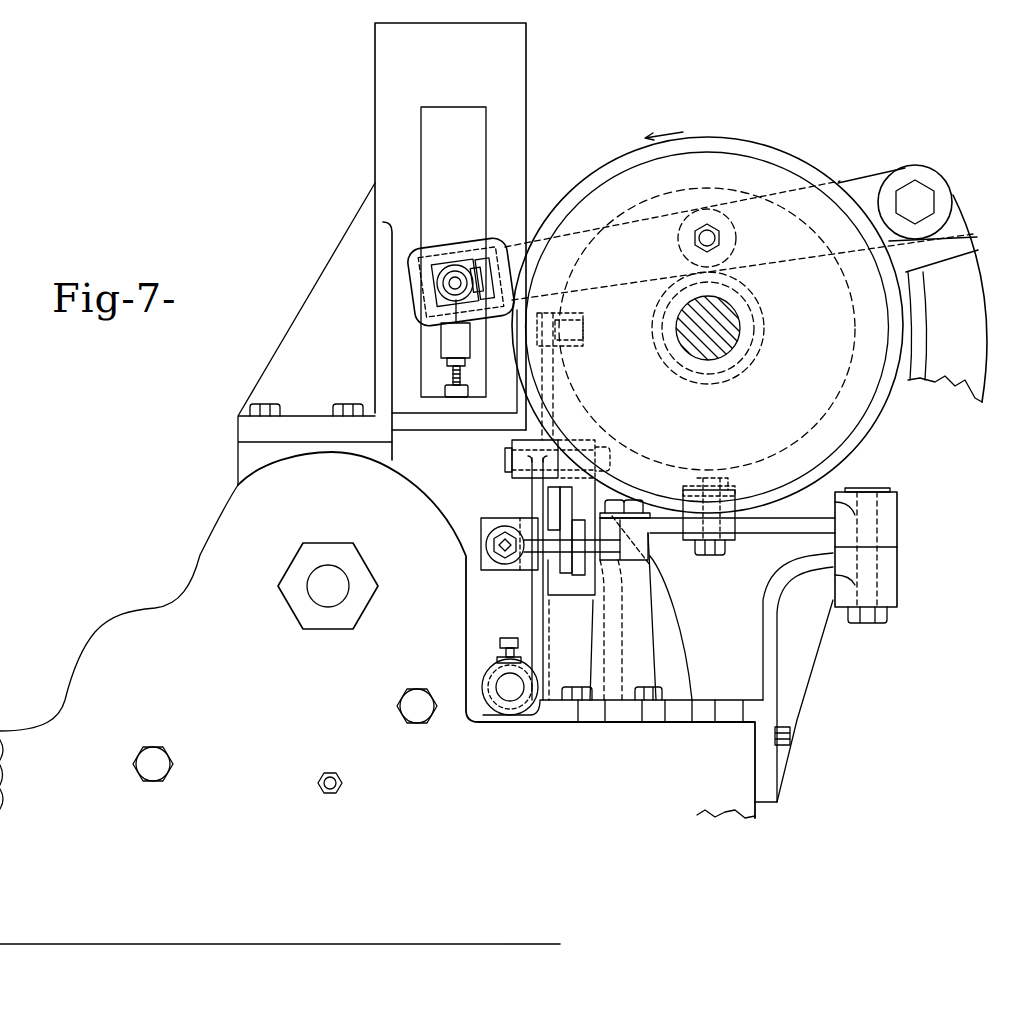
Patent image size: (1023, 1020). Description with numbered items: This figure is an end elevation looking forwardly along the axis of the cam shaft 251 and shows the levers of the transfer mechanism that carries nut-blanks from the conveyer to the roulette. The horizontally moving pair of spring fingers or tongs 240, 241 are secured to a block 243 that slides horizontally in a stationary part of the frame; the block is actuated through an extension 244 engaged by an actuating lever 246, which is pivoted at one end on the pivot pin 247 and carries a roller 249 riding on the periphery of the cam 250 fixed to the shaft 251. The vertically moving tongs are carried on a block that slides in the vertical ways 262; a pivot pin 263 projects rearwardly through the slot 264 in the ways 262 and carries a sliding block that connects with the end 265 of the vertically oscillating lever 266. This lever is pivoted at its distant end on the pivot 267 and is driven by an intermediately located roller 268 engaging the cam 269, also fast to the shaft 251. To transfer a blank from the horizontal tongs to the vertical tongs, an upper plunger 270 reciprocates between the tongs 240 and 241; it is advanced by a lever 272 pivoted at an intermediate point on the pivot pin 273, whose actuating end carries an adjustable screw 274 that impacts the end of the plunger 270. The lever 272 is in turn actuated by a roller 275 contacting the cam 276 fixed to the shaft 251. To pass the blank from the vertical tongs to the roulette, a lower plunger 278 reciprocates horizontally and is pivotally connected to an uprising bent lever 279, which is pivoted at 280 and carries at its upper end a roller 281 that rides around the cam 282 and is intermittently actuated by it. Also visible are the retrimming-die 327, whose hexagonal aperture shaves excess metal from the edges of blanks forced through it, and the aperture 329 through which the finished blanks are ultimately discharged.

The spring finger or tong 240 is at (523, 522).
The spring finger or tong 241 is at (514, 571).
The block 243 is at (482, 555).
The extension 244 is at (566, 528).
The actuating lever 246 is at (772, 530).
The pivot pin 247 is at (866, 546).
The roller 249 is at (735, 494).
The cam 250 is at (828, 404).
The cam shaft 251 is at (735, 335).
The vertical ways 262 is at (450, 241).
The pivot pin 263 is at (455, 348).
The slot 264 is at (422, 172).
The end of lever 265 is at (456, 252).
The vertically oscillating lever 266 is at (516, 258).
The pivot 267 is at (915, 202).
The roller 268 is at (722, 240).
The cam 269 is at (767, 158).
The upper plunger 270 is at (500, 538).
The lever 272 is at (497, 558).
The pivot pin 273 is at (618, 560).
The adjustable screw 274 is at (490, 545).
The roller 275 is at (690, 490).
The cam 276 is at (707, 327).
The lower plunger 278 is at (505, 688).
The uprising bent lever 279 is at (548, 372).
The pivot 280 is at (510, 456).
The roller 281 is at (568, 318).
The cam 282 is at (560, 350).
The retrimming-die 327 is at (328, 543).
The aperture 329 is at (328, 586).